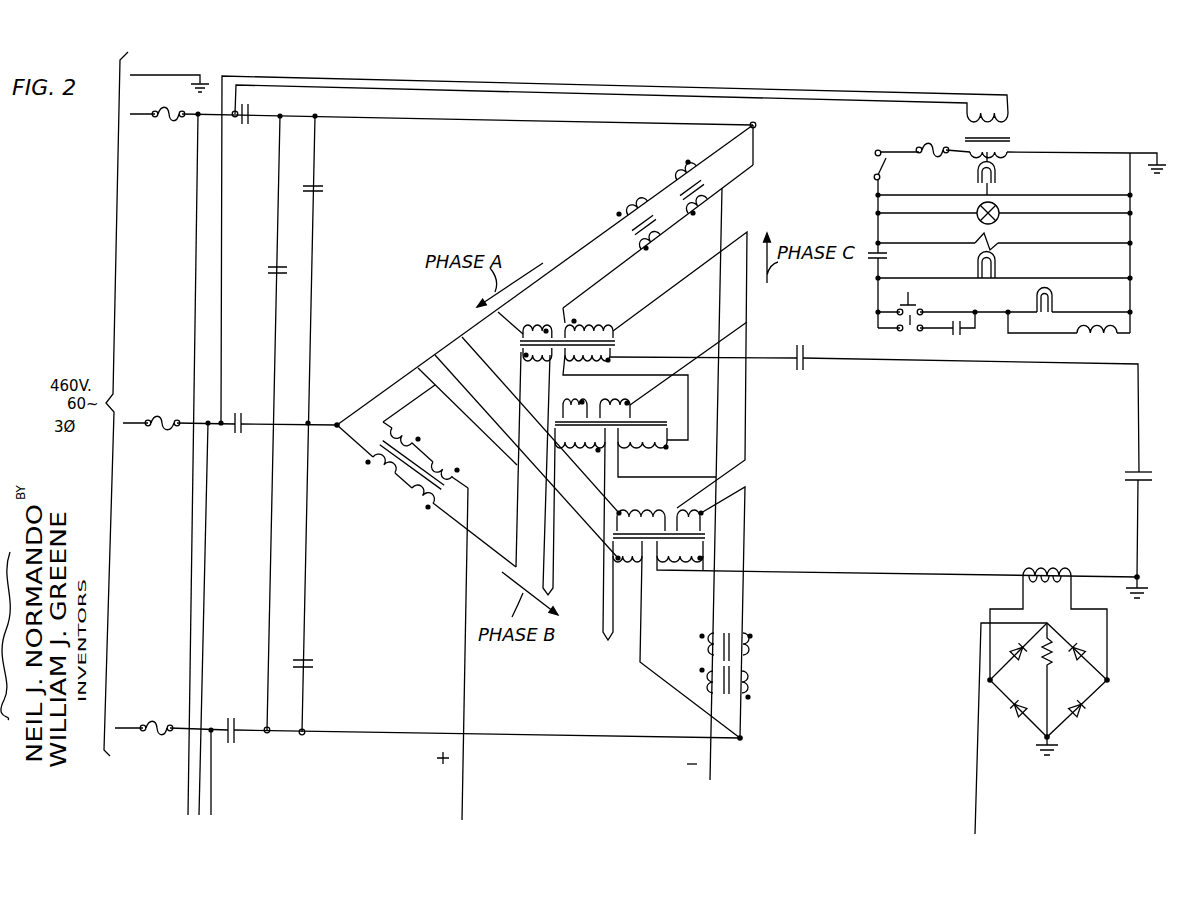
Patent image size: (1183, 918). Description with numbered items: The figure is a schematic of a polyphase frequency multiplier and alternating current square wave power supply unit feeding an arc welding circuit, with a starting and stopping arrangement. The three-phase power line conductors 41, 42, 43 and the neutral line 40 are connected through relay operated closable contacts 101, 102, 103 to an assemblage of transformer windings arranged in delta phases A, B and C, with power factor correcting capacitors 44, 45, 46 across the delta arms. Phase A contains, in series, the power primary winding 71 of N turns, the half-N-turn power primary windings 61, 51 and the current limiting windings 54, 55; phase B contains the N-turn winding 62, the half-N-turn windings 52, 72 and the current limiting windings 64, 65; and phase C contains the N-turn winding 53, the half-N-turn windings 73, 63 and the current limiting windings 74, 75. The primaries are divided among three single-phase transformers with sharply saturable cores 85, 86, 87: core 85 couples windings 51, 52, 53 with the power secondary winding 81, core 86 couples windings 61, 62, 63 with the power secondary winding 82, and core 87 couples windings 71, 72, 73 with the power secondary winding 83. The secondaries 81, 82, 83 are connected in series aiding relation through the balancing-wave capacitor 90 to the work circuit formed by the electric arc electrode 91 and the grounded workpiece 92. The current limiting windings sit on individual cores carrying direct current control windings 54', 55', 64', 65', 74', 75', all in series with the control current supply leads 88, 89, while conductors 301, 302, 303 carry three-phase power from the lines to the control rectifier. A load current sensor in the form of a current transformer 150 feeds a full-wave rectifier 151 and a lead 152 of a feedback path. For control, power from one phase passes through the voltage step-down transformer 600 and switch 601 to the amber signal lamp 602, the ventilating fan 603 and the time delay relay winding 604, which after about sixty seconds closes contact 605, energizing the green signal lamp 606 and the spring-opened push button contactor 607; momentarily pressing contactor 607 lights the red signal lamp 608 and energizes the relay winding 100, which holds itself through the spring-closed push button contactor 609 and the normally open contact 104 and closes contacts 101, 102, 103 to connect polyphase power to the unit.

The neutral line 40 is at (172, 75).
The power line conductor 41 is at (138, 117).
The power line conductor 42 is at (133, 420).
The power line conductor 43 is at (127, 727).
The power factor correcting capacitor 44 is at (267, 271).
The power factor correcting capacitor 45 is at (313, 665).
The power factor correcting capacitor 46 is at (324, 191).
The power primary winding 51 is at (547, 322).
The power primary winding 52 is at (521, 369).
The power primary winding 53 is at (597, 323).
The current limiting winding 54 is at (671, 161).
The direct current control winding 54' is at (730, 203).
The current limiting winding 55 is at (622, 197).
The direct current control winding 55' is at (666, 241).
The power primary winding 61 is at (571, 406).
The power primary winding 62 is at (587, 447).
The power primary winding 63 is at (620, 404).
The current limiting winding 64 is at (369, 473).
The direct current control winding 64' is at (419, 427).
The current limiting winding 65 is at (412, 507).
The direct current control winding 65' is at (458, 462).
The power primary winding 71 is at (650, 512).
The power primary winding 72 is at (630, 561).
The power primary winding 73 is at (704, 512).
The current limiting winding 74 is at (770, 684).
The direct current control winding 74' is at (690, 680).
The current limiting winding 75 is at (770, 643).
The direct current control winding 75' is at (684, 641).
The power secondary winding 81 is at (606, 361).
The power secondary winding 82 is at (648, 446).
The power secondary winding 83 is at (688, 568).
The saturable core 85 is at (619, 341).
The saturable core 86 is at (663, 422).
The saturable core 87 is at (703, 536).
The control current supply lead 88 is at (465, 758).
The control current supply lead 89 is at (712, 765).
The balancing-wave capacitor 90 is at (800, 370).
The electric arc electrode 91 is at (1144, 471).
The grounded workpiece 92 is at (1144, 482).
The relay winding 100 is at (1103, 342).
The relay operated closable contact 101 is at (242, 125).
The relay operated closable contact 102 is at (240, 412).
The relay operated closable contact 103 is at (232, 720).
The normally open contact 104 is at (960, 334).
The current transformer 150 is at (1052, 561).
The full-wave rectifier 151 is at (1063, 683).
The lead 152 is at (980, 770).
The conductor 301 is at (197, 158).
The conductor 302 is at (209, 486).
The conductor 303 is at (214, 757).
The voltage step-down transformer 600 is at (1012, 138).
The switch 601 is at (888, 168).
The amber signal lamp 602 is at (997, 173).
The ventilating fan 603 is at (1000, 220).
The time delay relay winding 604 is at (993, 244).
The contact 605 is at (874, 262).
The green signal lamp 606 is at (977, 262).
The spring-opened push button contactor 607 is at (924, 300).
The red signal lamp 608 is at (1053, 300).
The spring-closed push button contactor 609 is at (903, 333).